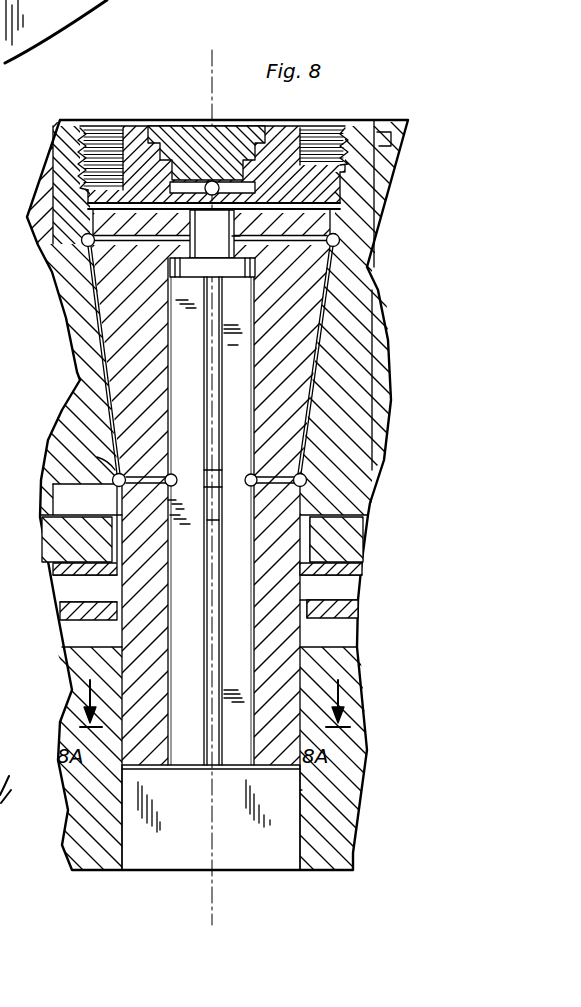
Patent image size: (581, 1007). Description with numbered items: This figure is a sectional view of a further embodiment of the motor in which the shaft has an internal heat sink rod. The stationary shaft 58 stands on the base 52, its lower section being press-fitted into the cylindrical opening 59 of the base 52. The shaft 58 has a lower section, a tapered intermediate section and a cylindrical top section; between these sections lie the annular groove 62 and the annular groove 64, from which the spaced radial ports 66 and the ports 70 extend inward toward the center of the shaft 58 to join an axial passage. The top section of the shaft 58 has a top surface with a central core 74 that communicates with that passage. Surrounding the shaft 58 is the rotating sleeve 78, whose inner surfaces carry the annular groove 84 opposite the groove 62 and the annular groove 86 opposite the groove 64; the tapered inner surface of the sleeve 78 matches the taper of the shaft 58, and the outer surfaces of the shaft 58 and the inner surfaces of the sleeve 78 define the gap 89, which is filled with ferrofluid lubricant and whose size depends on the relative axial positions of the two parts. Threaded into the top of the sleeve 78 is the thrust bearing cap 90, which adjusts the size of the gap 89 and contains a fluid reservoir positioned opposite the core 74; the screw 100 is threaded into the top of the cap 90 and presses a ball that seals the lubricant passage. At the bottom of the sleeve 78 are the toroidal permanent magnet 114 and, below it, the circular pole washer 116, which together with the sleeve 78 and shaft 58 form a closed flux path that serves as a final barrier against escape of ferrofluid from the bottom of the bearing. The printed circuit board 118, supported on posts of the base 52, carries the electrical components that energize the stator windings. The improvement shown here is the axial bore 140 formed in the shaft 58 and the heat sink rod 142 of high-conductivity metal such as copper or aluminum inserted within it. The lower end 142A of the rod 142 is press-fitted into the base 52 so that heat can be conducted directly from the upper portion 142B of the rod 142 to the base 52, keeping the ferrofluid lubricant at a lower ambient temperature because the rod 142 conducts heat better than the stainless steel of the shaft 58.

The base 52 is at (350, 672).
The shaft 58 is at (295, 435).
The cylindrical opening 59 is at (300, 797).
The annular groove 62 is at (112, 484).
The annular groove 64 is at (341, 241).
The radial ports 66 is at (269, 477).
The ports 70 is at (139, 245).
The central core 74 is at (243, 212).
The sleeve 78 is at (68, 416).
The annular groove 84 is at (93, 455).
The annular groove 86 is at (86, 248).
The gap 89 is at (102, 377).
The thrust bearing cap 90 is at (289, 126).
The screw 100 is at (241, 122).
The toroidal permanent magnet 114 is at (52, 540).
The circular pole washer 116 is at (57, 567).
The printed circuit board 118 is at (62, 610).
The axial bore 140 is at (250, 269).
The heat sink rod 142 is at (170, 874).
The lower end 142A is at (250, 860).
The upper portion 142B is at (232, 535).